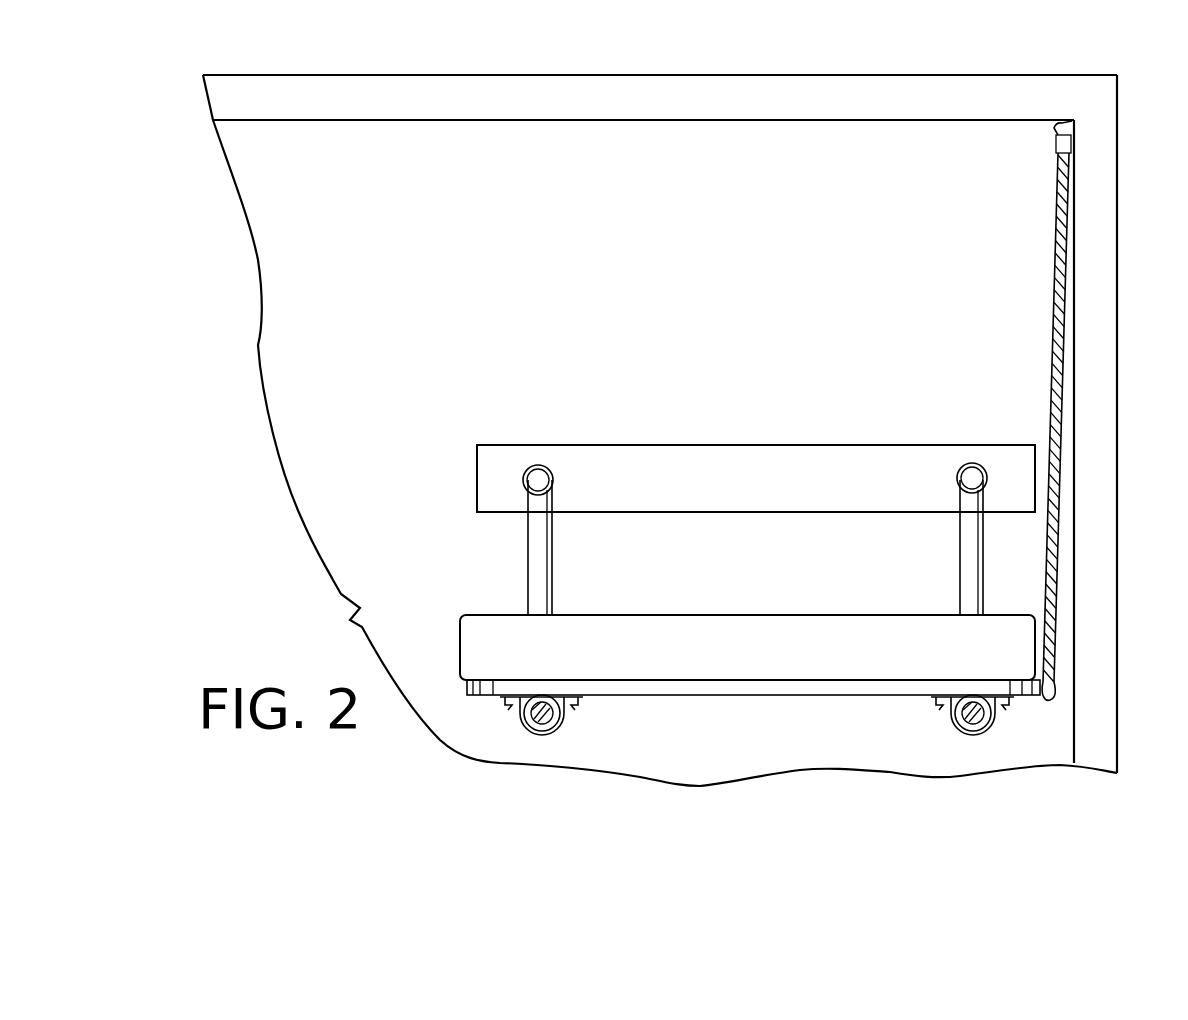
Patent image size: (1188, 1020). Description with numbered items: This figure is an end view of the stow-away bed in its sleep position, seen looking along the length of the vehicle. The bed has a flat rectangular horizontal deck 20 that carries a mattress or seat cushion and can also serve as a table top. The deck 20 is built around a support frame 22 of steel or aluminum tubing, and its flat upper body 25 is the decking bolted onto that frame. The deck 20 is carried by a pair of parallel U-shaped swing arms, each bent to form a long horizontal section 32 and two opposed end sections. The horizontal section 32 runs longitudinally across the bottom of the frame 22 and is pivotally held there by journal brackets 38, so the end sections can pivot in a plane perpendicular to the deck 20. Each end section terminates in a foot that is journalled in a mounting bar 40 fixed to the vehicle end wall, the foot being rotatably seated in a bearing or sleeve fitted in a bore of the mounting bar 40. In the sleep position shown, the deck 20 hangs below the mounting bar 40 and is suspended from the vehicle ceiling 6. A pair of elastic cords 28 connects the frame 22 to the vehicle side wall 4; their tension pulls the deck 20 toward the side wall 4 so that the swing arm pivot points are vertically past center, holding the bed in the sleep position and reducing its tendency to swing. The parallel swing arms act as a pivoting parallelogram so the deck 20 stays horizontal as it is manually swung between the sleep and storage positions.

The vehicle side wall 4 is at (1105, 345).
The vehicle ceiling 6 is at (825, 92).
The deck 20 is at (787, 605).
The support frame 22 is at (715, 695).
The platform 25 is at (490, 640).
The elastic cords 28 is at (1055, 337).
The horizontal section 32 is at (523, 720).
The journal brackets 38 is at (560, 722).
The mounting bar 40 is at (710, 460).